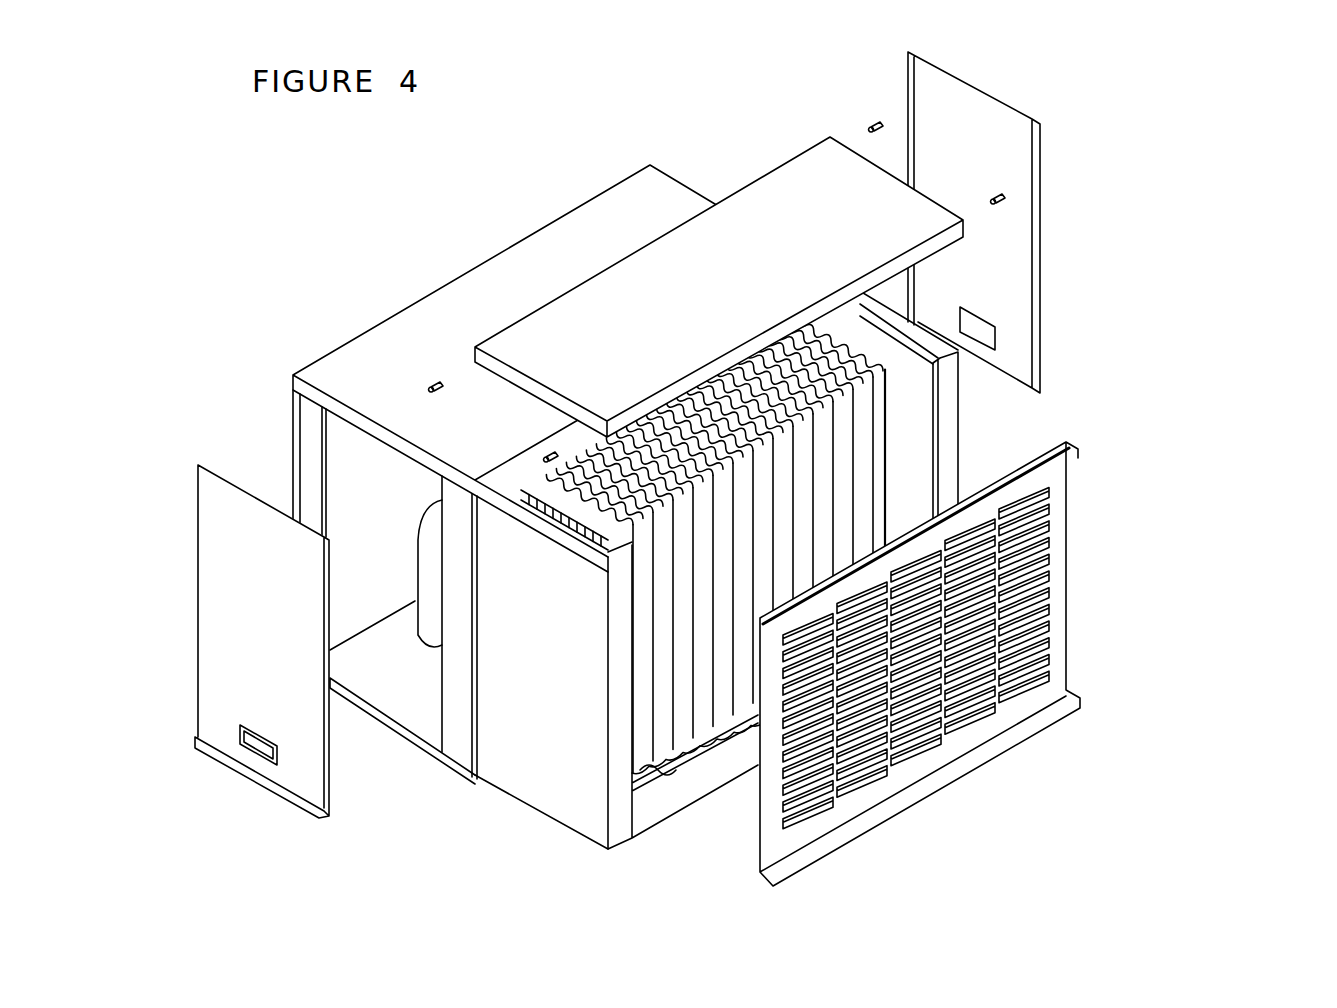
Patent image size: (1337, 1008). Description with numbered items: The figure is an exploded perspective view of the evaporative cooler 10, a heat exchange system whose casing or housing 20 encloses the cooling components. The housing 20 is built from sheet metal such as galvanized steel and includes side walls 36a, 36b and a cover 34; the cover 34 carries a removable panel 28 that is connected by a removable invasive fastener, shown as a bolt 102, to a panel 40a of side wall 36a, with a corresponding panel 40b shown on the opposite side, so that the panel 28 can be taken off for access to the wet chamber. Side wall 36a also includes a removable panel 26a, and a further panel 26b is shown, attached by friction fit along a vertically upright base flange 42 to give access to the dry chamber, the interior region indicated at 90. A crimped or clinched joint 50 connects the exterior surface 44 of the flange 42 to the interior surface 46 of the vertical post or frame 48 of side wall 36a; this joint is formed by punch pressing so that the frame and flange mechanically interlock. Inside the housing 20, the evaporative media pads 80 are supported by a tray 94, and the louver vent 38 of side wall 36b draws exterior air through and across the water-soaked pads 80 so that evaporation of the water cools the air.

The evaporative cooler 10 is at (1260, 85).
The housing 20 is at (1197, 142).
The removable panel 26a is at (198, 578).
The second access door panel 26b is at (1038, 166).
The removable panel 28 is at (734, 181).
The cover 34 is at (402, 260).
The side wall 36a is at (295, 856).
The side wall 36b is at (1045, 820).
The louver vent 38 is at (1072, 640).
The panel 40a is at (577, 808).
The second filter frame channel 40b is at (958, 433).
The base flange 42 is at (383, 728).
The exterior surface 44 is at (455, 762).
The interior surface 46 is at (472, 554).
The vertical post 48 is at (437, 629).
The clinched joint 50 is at (342, 377).
The evaporative media pad 80 is at (885, 415).
The compartment 90 is at (370, 503).
The tray 94 is at (663, 760).
The bolt 102 is at (437, 380).